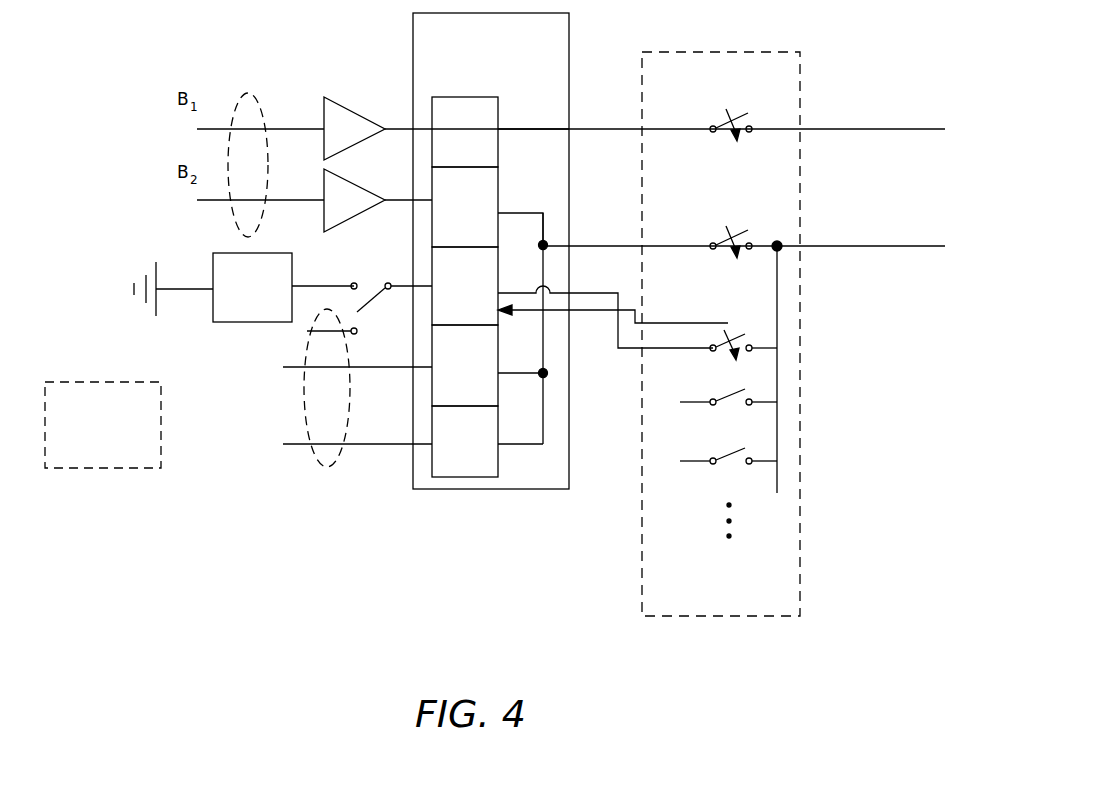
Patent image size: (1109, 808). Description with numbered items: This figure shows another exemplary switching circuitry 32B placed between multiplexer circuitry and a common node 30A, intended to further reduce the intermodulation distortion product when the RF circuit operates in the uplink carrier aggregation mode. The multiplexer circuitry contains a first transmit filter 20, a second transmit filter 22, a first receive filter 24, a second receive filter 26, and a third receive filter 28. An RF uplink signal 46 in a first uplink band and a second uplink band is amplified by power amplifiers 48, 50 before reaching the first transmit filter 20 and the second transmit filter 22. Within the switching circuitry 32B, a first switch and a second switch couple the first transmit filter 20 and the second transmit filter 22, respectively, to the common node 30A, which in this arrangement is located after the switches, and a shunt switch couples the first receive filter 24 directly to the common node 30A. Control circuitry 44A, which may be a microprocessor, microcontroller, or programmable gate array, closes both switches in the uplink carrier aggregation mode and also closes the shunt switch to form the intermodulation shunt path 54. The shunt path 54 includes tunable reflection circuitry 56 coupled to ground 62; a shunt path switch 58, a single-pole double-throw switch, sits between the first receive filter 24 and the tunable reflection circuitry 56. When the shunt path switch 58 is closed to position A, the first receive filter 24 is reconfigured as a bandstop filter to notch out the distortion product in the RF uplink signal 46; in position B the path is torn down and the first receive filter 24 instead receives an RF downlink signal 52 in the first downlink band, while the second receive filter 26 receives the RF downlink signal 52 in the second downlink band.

The first transmit filter 20 is at (477, 141).
The second transmit filter 22 is at (477, 217).
The first receive filter 24 is at (477, 295).
The second receive filter 26 is at (477, 375).
The third receive filter 28 is at (477, 453).
The common node 30A is at (777, 240).
The switching circuitry 32B is at (746, 334).
The control circuitry 44A is at (120, 433).
The RF uplink signal 46 is at (250, 92).
The power amplifier 48 is at (352, 139).
The power amplifier 50 is at (352, 211).
The RF downlink signal 52 is at (333, 472).
The IMD shunt path 54 is at (669, 323).
The tunable reflection circuitry 56 is at (263, 298).
The shunt path switch 58 is at (380, 298).
The ground 62 is at (130, 291).